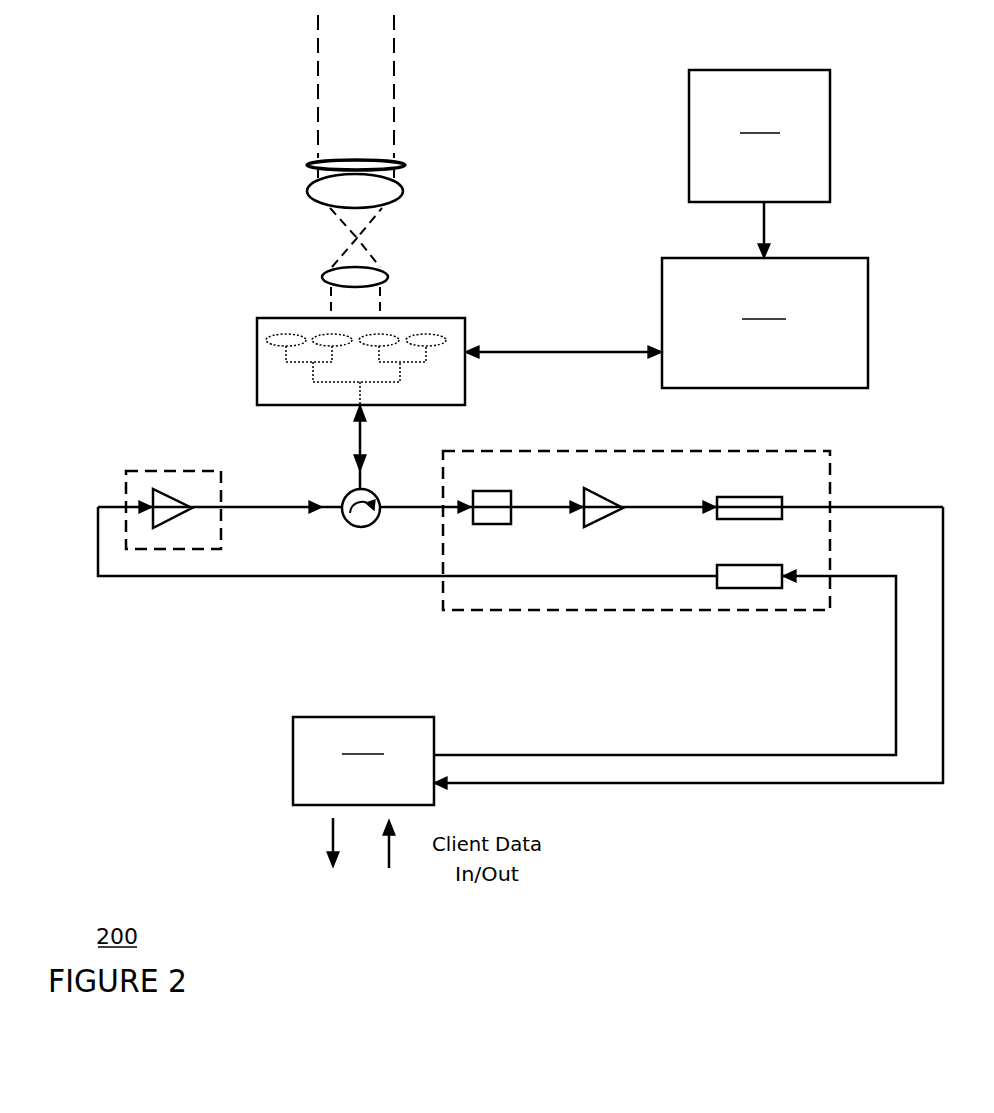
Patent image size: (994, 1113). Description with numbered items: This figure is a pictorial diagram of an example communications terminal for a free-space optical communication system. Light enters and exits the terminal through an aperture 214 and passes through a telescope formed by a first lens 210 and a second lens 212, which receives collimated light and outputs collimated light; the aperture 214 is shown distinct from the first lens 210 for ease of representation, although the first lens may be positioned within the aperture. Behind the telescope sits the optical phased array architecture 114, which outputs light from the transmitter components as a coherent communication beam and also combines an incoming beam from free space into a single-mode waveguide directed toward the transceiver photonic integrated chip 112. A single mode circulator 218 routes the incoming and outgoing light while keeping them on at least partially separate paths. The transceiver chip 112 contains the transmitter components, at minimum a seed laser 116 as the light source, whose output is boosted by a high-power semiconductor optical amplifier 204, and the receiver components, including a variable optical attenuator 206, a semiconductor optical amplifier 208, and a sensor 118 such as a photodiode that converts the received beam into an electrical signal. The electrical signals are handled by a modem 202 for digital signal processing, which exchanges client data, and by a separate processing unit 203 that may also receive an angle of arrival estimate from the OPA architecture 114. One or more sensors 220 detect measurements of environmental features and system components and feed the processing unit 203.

The modem 202 is at (363, 761).
The processing unit 203 is at (765, 323).
The high-power semiconductor optical amplifier 204 is at (126, 494).
The variable optical attenuator 206 is at (473, 468).
The semiconductor optical amplifier 208 is at (603, 493).
The first lens 210 is at (405, 193).
The second lens 212 is at (388, 277).
The aperture 214 is at (307, 165).
The single mode circulator 218 is at (382, 498).
The sensors 220 is at (759, 136).
The transceiver photonic integrated chip 112 is at (647, 451).
The optical phased array architecture 114 is at (257, 358).
The seed laser 116 is at (737, 565).
The sensor 118 is at (737, 497).